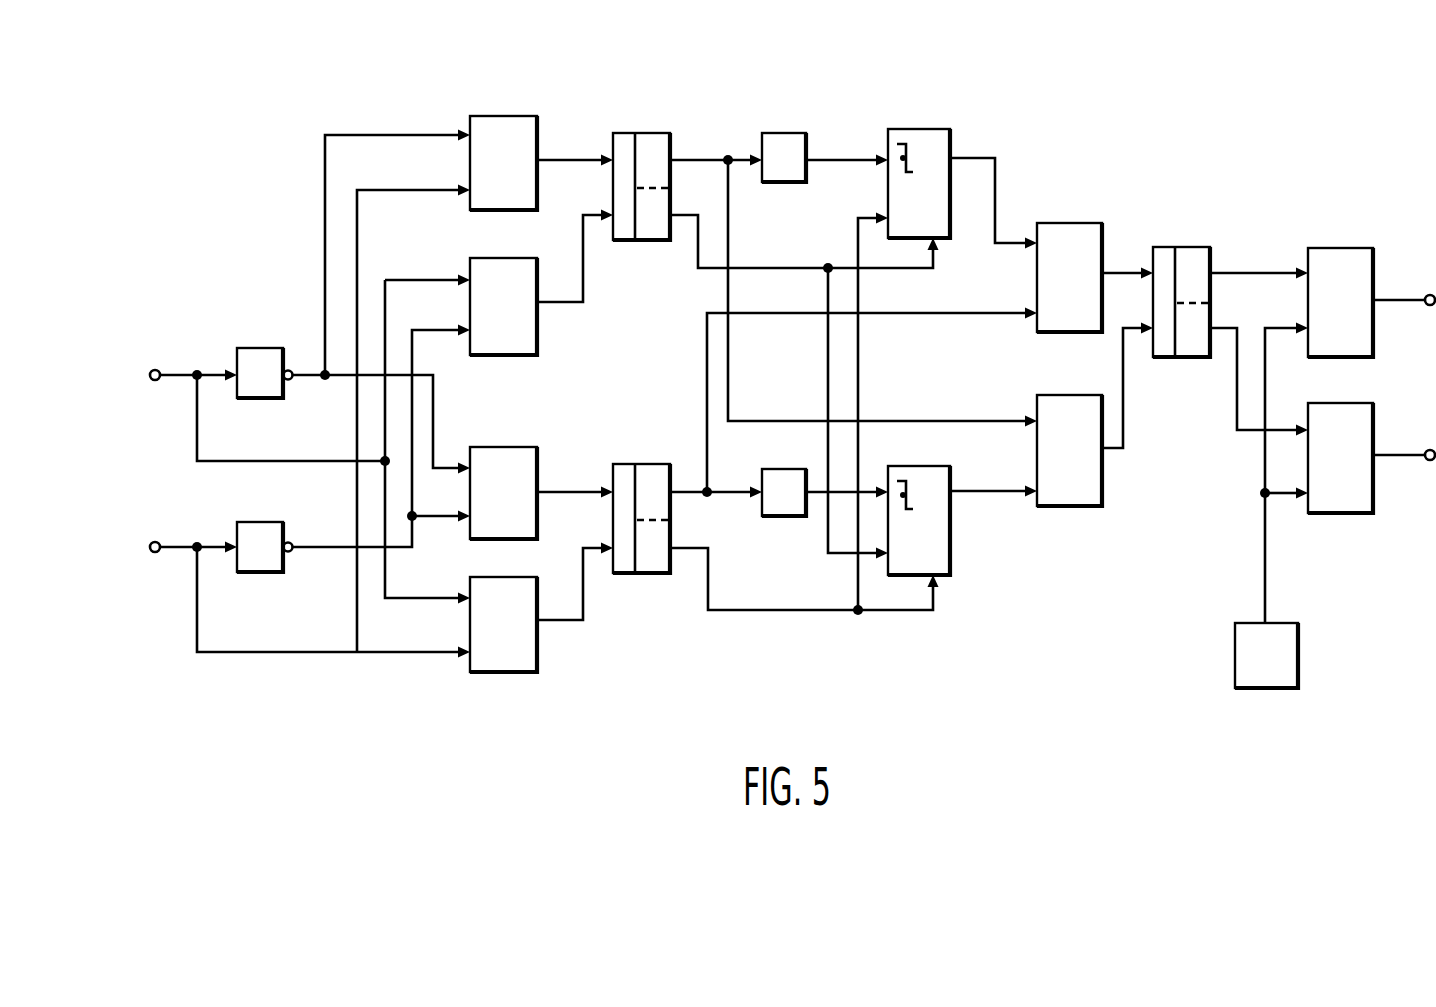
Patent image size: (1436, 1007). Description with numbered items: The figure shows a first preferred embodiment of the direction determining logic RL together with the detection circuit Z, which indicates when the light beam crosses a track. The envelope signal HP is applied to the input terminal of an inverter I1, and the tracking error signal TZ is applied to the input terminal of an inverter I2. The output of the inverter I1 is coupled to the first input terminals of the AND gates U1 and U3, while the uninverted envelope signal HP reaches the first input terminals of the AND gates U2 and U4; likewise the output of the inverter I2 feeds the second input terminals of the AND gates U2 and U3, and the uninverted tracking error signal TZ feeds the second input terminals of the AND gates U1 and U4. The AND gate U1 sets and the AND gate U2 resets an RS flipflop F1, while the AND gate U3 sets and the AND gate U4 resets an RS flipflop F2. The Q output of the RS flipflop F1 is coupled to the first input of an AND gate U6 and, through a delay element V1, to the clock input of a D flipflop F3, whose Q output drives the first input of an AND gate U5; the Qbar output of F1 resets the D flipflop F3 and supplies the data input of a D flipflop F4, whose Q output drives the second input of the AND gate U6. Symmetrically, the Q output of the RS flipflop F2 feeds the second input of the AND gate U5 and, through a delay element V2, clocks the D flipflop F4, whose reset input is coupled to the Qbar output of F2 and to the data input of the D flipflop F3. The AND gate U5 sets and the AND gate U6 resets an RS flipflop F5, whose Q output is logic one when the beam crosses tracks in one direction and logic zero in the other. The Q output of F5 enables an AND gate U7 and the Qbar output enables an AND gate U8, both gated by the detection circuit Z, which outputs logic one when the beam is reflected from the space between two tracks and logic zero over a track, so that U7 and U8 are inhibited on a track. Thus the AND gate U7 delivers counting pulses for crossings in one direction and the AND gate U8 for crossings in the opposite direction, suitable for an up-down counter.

The envelope signal HP is at (158, 360).
The tracking error signal TZ is at (158, 565).
The inverter I1 is at (265, 356).
The inverter I2 is at (265, 566).
The AND gate U1 is at (503, 148).
The AND gate U2 is at (503, 291).
The AND gate U3 is at (503, 478).
The AND gate U4 is at (503, 609).
The AND gate U5 is at (1069, 259).
The AND gate U6 is at (1069, 468).
The AND gate U7 is at (1340, 286).
The AND gate U8 is at (1340, 476).
The RS flipflop F1 is at (641, 170).
The RS flipflop F2 is at (641, 504).
The D flipflop F3 is at (919, 166).
The D flipflop F4 is at (919, 505).
The RS flipflop F5 is at (1181, 285).
The delay element V1 is at (784, 141).
The delay element V2 is at (784, 477).
The detection circuit Z is at (1282, 655).
The direction determining logic RL is at (1045, 153).